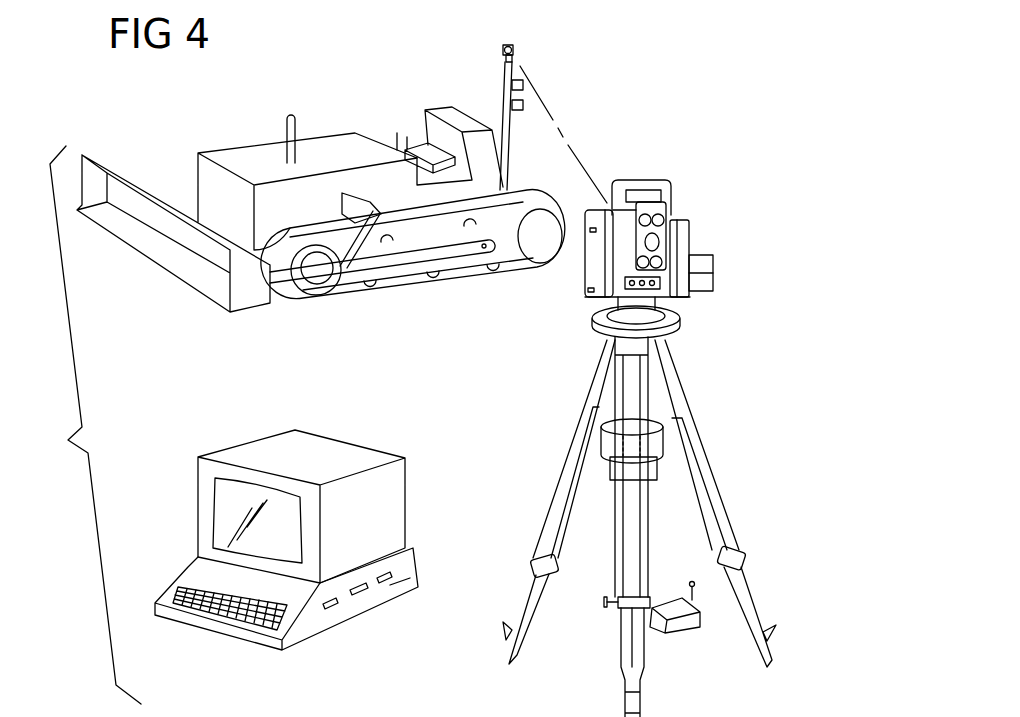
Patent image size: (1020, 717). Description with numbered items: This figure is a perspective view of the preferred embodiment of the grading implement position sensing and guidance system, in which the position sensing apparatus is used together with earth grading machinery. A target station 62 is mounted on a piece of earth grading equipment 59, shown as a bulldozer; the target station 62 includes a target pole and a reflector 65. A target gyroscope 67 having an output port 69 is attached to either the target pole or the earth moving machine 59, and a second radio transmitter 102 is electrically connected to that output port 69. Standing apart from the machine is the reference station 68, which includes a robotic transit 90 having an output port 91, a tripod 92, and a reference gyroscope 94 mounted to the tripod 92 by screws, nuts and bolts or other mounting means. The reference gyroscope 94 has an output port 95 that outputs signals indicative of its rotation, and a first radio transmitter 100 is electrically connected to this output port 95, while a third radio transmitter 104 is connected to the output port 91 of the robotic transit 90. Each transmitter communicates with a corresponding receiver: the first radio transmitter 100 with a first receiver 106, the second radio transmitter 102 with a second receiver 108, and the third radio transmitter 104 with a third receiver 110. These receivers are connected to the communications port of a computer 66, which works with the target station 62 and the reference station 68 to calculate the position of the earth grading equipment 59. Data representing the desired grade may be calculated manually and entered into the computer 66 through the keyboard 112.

The earth grading equipment 59 is at (220, 152).
The output port 69 is at (505, 90).
The reflector 65 is at (512, 42).
The target station 62 is at (518, 62).
The second radio transmitter 102 is at (523, 85).
The target gyroscope 67 is at (523, 105).
The reference station 68 is at (506, 157).
The robotic transit 90 is at (690, 238).
The third radio transmitter 104 is at (714, 264).
The output port 91 is at (714, 284).
The tripod 92 is at (697, 440).
The reference gyroscope 94 is at (665, 455).
The output port 95 is at (655, 478).
The first radio transmitter 100 is at (682, 633).
The computer 66 is at (198, 508).
The keyboard 112 is at (188, 585).
The third receiver 110 is at (402, 573).
The second receiver 108 is at (368, 590).
The first receiver 106 is at (333, 603).